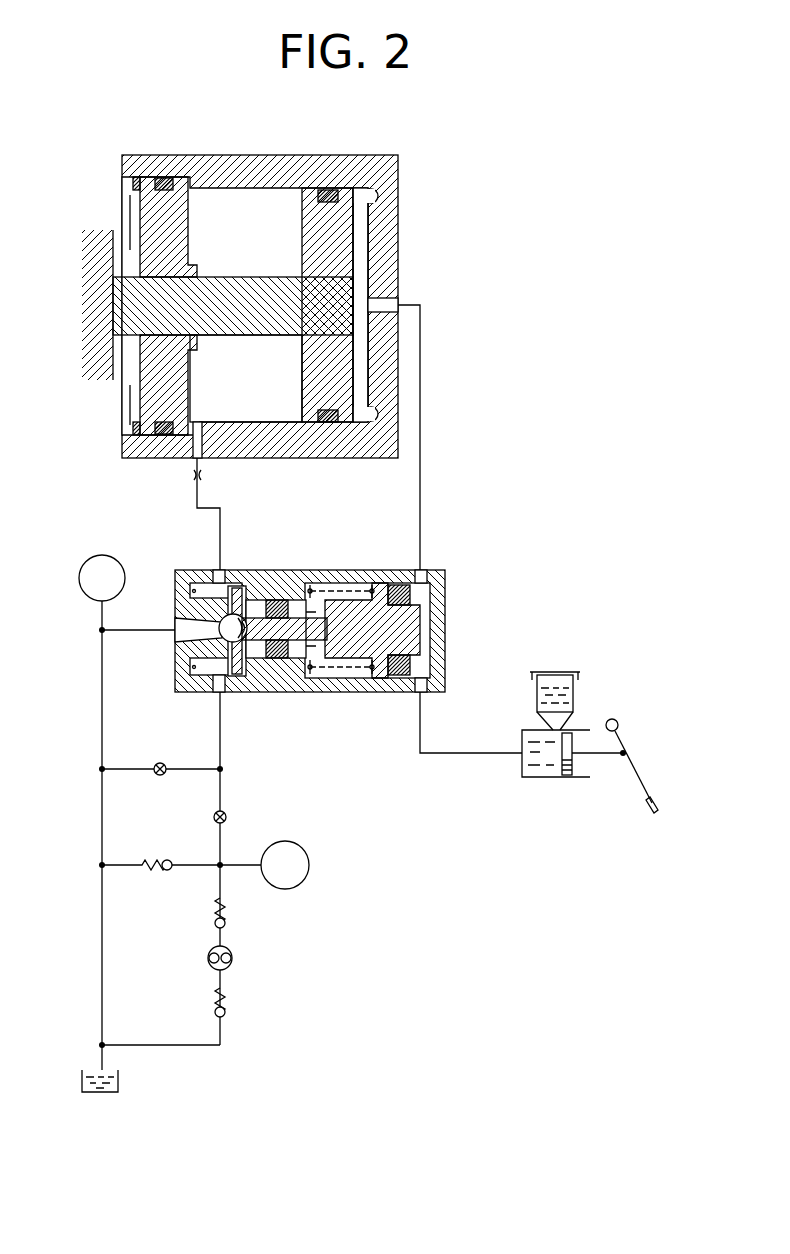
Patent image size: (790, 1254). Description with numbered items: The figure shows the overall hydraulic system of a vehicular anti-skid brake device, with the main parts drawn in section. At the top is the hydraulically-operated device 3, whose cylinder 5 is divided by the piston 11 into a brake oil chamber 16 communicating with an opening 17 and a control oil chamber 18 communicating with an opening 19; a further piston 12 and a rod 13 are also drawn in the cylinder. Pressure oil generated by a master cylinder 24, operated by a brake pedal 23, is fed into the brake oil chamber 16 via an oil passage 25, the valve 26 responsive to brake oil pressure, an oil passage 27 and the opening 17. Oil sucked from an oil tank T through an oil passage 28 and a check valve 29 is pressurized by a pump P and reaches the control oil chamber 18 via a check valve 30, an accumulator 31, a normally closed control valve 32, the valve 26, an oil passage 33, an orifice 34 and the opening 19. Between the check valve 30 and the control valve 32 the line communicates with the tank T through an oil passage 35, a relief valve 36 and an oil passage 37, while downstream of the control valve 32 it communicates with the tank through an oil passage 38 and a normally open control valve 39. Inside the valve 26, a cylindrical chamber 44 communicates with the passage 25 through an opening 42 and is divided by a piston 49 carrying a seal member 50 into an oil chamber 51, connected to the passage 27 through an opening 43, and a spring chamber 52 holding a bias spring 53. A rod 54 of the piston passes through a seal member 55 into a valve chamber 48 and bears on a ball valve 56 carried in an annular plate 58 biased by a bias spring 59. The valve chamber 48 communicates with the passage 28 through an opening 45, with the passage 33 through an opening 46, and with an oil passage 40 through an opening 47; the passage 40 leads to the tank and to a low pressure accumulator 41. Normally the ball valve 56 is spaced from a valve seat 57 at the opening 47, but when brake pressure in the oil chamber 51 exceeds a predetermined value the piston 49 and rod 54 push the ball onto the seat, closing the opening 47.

The hydraulically-operated device 3 is at (350, 150).
The cylinder 5 is at (392, 226).
The piston 11 is at (312, 206).
The piston 12 is at (170, 235).
The brake pedal 13 is at (249, 296).
The brake oil chamber 16 is at (360, 258).
The opening 17 is at (390, 303).
The control oil chamber 18 is at (258, 385).
The opening 19 is at (200, 428).
The brake pedal 23 is at (618, 728).
The master cylinder 24 is at (548, 778).
The oil passage 25 is at (462, 754).
The valve responsive to brake oil pressure 26 is at (445, 560).
The oil passage 27 is at (421, 420).
The oil passage 28 is at (165, 1046).
The check valve 29 is at (225, 1015).
The check valve 30 is at (226, 923).
The accumulator 31 is at (309, 864).
The normally closed control valve 32 is at (226, 818).
The oil passage 33 is at (221, 516).
The orifice 34 is at (209, 478).
The oil passage 35 is at (192, 864).
The relief valve 36 is at (170, 869).
The oil passage 37 is at (101, 922).
The oil passage 38 is at (192, 768).
The normally open control valve 39 is at (166, 773).
The oil passage 40 is at (122, 633).
The low pressure accumulator 41 is at (78, 578).
The opening 42 is at (424, 692).
The opening 43 is at (432, 580).
The cylindrical chamber 44 is at (343, 690).
The opening 45 is at (212, 692).
The opening 46 is at (222, 572).
The opening 47 is at (180, 638).
The valve chamber 48 is at (268, 652).
The piston 49 is at (394, 642).
The seal member 50 is at (400, 584).
The oil chamber 51 is at (432, 655).
The spring chamber 52 is at (327, 682).
The bias spring 53 is at (349, 582).
The rod 54 is at (305, 628).
The seal member 55 is at (316, 658).
The ball valve 56 is at (268, 606).
The valve seat 57 is at (219, 628).
The annular plate 58 is at (238, 680).
The bias spring 59 is at (194, 583).
The pump P is at (233, 958).
The oil tank T is at (82, 1082).